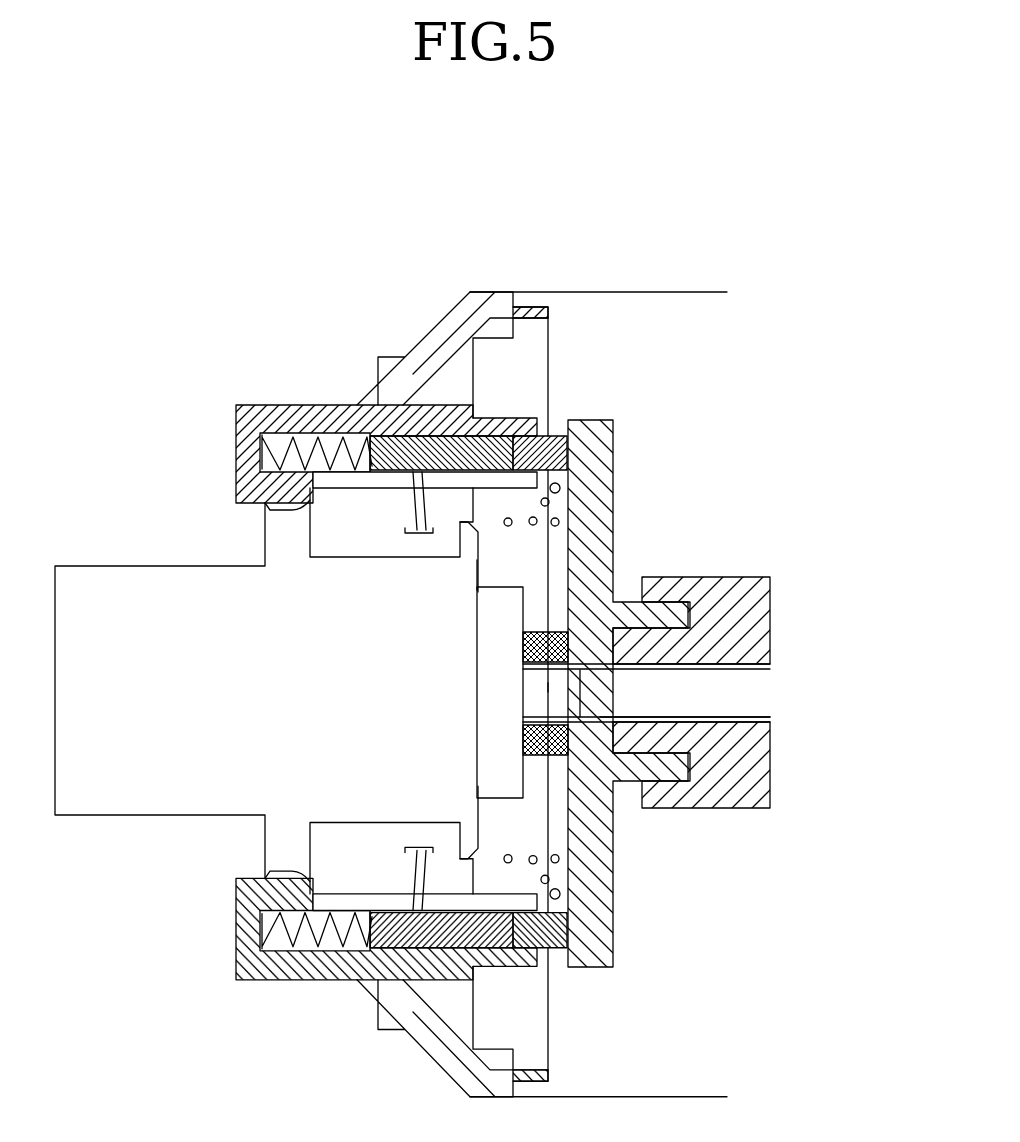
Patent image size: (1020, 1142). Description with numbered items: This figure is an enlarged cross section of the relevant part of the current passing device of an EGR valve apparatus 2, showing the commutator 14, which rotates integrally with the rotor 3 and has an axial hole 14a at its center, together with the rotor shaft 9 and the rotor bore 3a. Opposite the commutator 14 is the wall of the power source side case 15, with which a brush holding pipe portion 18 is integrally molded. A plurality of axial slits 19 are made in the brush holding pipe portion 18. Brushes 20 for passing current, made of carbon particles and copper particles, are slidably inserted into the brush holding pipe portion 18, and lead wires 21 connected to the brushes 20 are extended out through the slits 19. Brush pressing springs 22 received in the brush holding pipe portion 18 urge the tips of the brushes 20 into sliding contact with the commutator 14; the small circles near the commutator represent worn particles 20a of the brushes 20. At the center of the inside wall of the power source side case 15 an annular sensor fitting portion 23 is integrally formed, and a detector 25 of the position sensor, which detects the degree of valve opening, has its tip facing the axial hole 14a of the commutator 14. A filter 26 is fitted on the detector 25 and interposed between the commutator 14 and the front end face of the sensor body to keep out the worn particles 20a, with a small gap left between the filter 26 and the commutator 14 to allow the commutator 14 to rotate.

The actuator assembly 2 is at (659, 279).
The rotor 3 is at (742, 617).
The bore 3a is at (728, 665).
The drive shaft 9 is at (702, 692).
The commutator 14 is at (613, 452).
The axial hole 14a is at (578, 680).
The power source side case 15 is at (427, 310).
The brush holding pipe portion 18 is at (285, 967).
The axial slits 19 is at (456, 906).
The brushes 20 is at (607, 1020).
The worn particles 20a is at (552, 882).
The lead wires 21 is at (410, 870).
The brush pressing springs 22 is at (330, 942).
The sensor fitting portion 23 is at (510, 585).
The detector 25 is at (542, 701).
The filter 26 is at (540, 757).